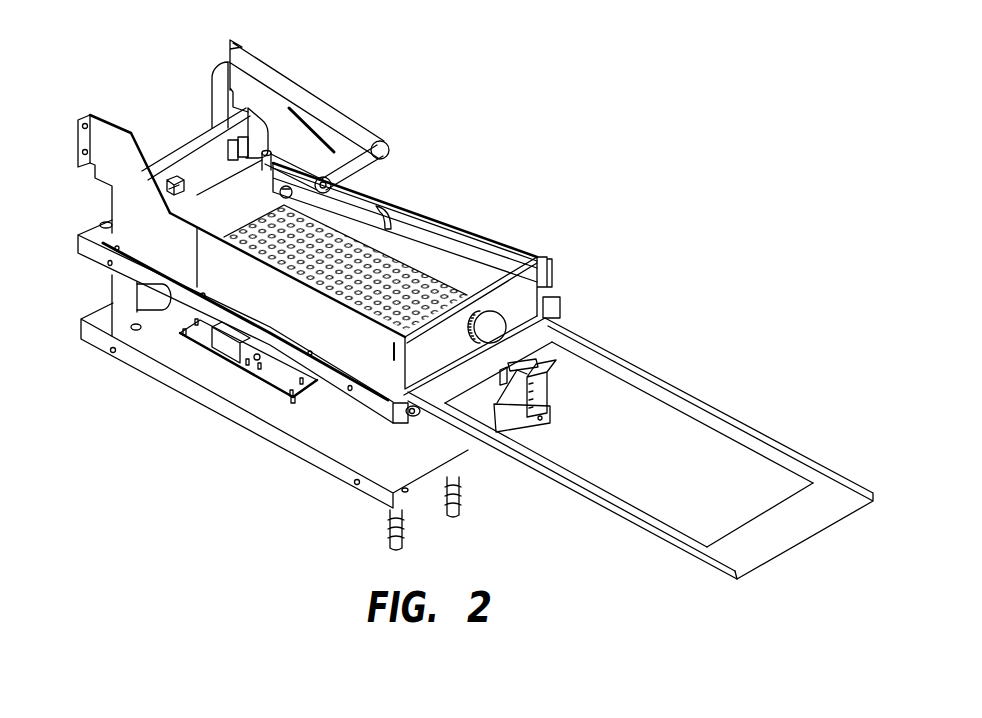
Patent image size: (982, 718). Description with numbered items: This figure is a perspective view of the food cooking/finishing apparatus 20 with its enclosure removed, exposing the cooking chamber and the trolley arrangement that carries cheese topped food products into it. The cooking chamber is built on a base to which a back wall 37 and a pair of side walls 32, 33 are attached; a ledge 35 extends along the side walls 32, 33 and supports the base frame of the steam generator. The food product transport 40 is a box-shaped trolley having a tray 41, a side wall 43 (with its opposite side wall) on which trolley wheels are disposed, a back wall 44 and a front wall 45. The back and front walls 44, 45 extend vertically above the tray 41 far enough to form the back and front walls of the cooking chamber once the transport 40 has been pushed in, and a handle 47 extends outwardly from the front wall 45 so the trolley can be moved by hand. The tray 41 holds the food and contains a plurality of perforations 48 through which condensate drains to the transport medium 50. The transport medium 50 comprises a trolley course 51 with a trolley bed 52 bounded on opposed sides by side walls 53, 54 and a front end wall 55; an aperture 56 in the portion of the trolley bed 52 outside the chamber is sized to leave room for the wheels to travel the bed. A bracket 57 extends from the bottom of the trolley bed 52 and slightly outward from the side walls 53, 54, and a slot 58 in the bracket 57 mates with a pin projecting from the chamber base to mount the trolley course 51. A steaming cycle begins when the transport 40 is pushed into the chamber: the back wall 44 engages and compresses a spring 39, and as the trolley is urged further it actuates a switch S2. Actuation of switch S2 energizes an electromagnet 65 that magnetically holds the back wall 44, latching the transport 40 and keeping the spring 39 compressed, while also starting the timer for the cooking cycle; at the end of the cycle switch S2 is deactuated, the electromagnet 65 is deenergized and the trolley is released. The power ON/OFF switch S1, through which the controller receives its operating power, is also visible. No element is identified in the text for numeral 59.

The food cooking/finishing apparatus 20 is at (479, 310).
The side wall 32 is at (289, 308).
The side wall 33 is at (311, 163).
The ledge 35 is at (502, 253).
The back wall 37 is at (157, 167).
The spring 39 is at (259, 130).
The food product transport 40 is at (528, 294).
The tray 41 is at (362, 240).
The side wall 43 is at (402, 256).
The back wall 44 is at (224, 210).
The front wall 45 is at (452, 362).
The handle 47 is at (492, 328).
The perforations or apertures 48 is at (427, 283).
The transport medium 50 is at (642, 452).
The trolley course 51 is at (557, 477).
The trolley bed 52 is at (833, 497).
The side wall 53 is at (790, 450).
The side wall 54 is at (643, 520).
The front end wall 55 is at (787, 547).
The aperture 56 is at (700, 455).
The bracket 57 is at (414, 408).
The slot 58 is at (405, 407).
The hose fitting 59 is at (410, 408).
The electromagnet 65 is at (198, 172).
The power ON/OFF switch S1 is at (545, 399).
The switch S2 is at (173, 180).